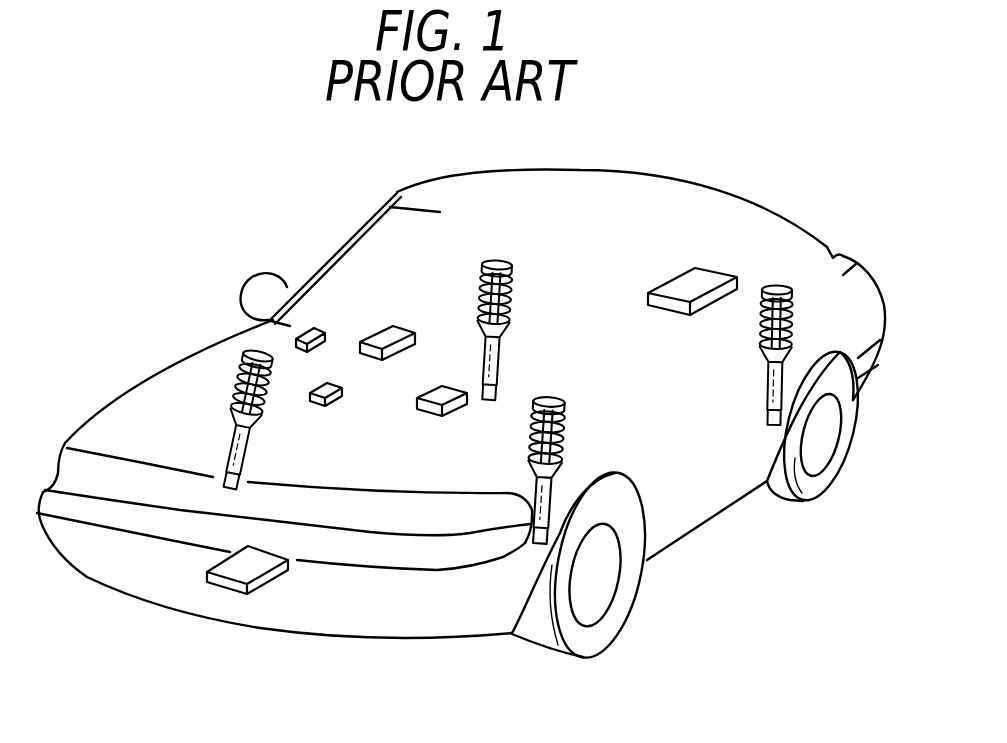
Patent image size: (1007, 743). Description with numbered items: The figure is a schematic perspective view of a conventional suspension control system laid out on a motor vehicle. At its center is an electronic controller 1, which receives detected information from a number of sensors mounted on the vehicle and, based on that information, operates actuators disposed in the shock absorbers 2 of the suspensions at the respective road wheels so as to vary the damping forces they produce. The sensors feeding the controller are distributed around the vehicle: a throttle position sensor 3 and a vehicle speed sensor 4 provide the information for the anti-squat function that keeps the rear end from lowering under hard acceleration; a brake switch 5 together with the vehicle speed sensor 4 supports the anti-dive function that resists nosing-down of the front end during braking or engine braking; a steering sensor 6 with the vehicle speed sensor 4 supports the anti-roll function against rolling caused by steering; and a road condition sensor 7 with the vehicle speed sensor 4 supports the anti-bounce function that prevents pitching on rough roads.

The electronic controller 1 is at (810, 170).
The shock absorbers 2 is at (780, 283).
The throttle position sensor 3 is at (447, 417).
The vehicle speed sensor 4 is at (312, 327).
The brake switch 5 is at (330, 407).
The steering sensor 6 is at (387, 326).
The road condition sensor 7 is at (235, 590).